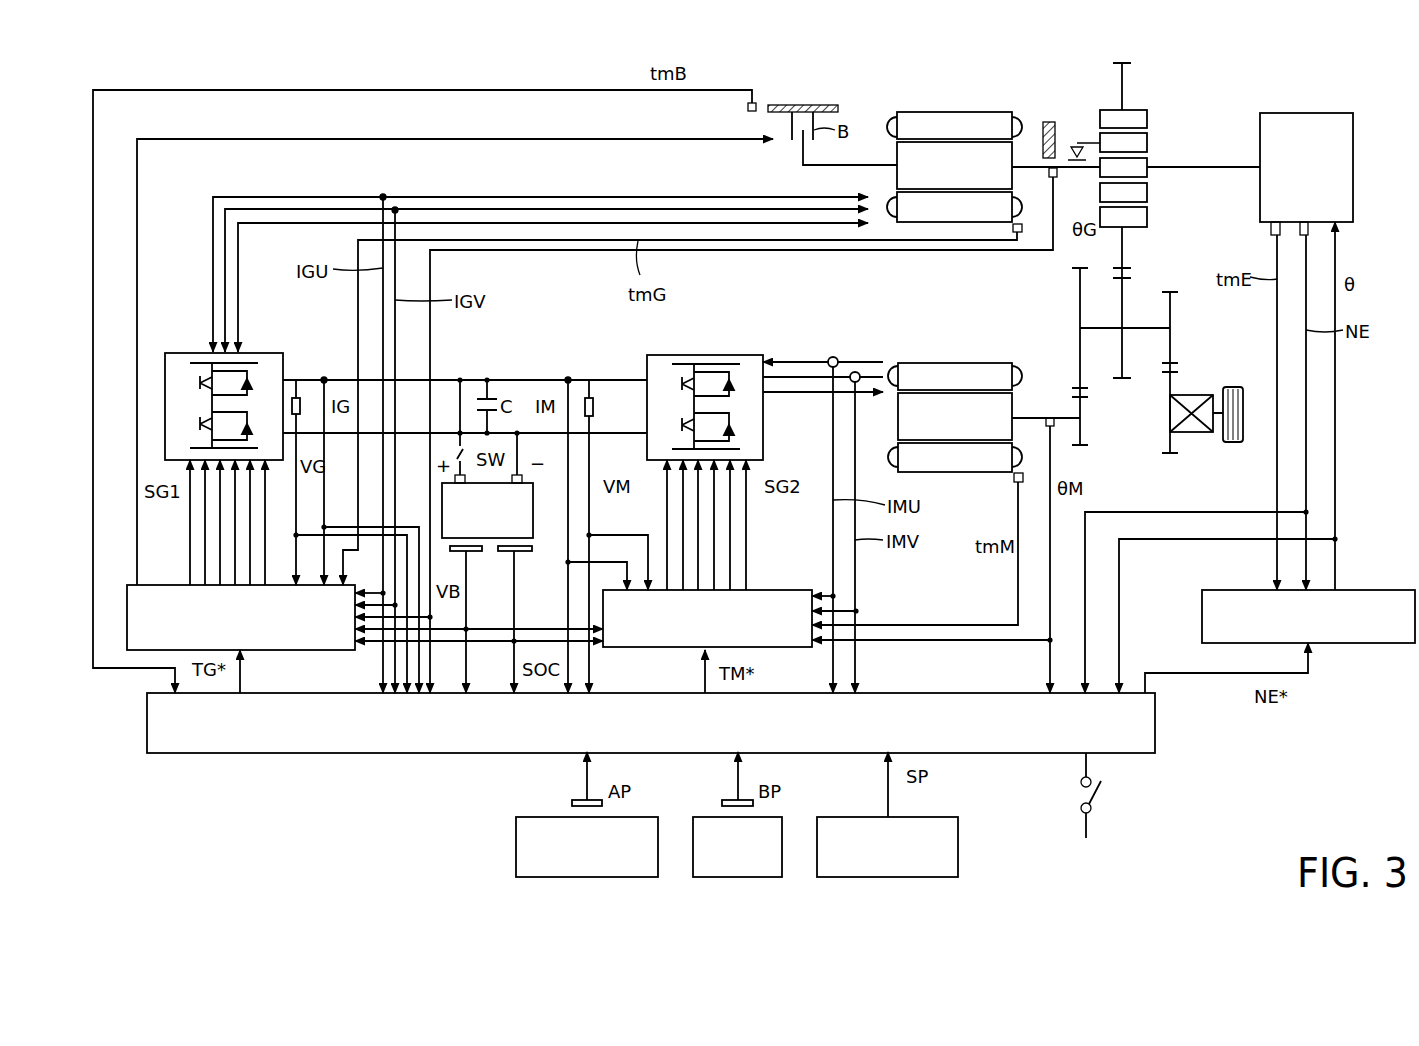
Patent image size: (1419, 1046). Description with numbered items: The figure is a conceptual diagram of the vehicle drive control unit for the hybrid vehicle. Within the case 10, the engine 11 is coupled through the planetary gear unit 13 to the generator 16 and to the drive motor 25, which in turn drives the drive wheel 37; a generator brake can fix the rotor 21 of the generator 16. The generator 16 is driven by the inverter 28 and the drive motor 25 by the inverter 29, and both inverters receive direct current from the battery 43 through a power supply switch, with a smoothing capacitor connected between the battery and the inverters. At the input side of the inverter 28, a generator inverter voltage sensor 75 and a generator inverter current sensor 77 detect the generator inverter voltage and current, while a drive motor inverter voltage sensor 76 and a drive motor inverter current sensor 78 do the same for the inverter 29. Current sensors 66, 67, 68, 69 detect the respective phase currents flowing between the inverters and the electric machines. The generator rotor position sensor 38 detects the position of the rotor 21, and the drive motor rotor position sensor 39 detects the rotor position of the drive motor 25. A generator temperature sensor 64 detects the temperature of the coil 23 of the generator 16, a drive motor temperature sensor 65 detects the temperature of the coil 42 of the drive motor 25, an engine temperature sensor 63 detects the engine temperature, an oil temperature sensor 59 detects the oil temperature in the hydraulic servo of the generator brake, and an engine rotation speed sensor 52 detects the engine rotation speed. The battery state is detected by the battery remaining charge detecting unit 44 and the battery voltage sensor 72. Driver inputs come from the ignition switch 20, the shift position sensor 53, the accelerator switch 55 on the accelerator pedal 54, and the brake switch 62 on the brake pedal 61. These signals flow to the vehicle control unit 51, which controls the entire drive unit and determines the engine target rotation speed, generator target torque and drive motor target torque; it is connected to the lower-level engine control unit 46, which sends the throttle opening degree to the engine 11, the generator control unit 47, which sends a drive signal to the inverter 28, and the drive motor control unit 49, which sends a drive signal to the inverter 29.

The case 10 is at (793, 100).
The engine 11 is at (1260, 188).
The planetary gear unit 13 is at (1148, 145).
The generator 16 is at (962, 128).
The ignition switch 20 is at (1100, 792).
The rotor 21 is at (980, 160).
The coil 23 is at (1010, 112).
The drive motor 25 is at (937, 360).
The inverter 28 is at (258, 353).
The inverter 29 is at (740, 355).
The drive wheel 37 is at (1232, 387).
The generator rotor position sensor 38 is at (1058, 177).
The drive motor rotor position sensor 39 is at (1050, 418).
The coil 42 is at (890, 360).
The battery 43 is at (533, 518).
The battery remaining charge detecting unit 44 is at (520, 552).
The engine control unit 46 is at (1388, 590).
The generator control unit 47 is at (172, 585).
The drive motor control unit 49 is at (790, 590).
The vehicle control unit 51 is at (1155, 730).
The engine rotation speed sensor 52 is at (1310, 233).
The shift position sensor 53 is at (958, 843).
The accelerator pedal 54 is at (516, 843).
The accelerator switch 55 is at (572, 802).
The oil temperature sensor 59 is at (748, 107).
The brake pedal 61 is at (775, 817).
The brake switch 62 is at (722, 802).
The engine temperature sensor 63 is at (1271, 229).
The generator temperature sensor 64 is at (1022, 233).
The drive motor temperature sensor 65 is at (1017, 482).
The current sensor 66 is at (383, 195).
The current sensor 67 is at (395, 208).
The current sensor 68 is at (833, 357).
The current sensor 69 is at (855, 372).
The battery voltage sensor 72 is at (475, 552).
The generator inverter voltage sensor 75 is at (296, 380).
The drive motor inverter voltage sensor 76 is at (589, 398).
The generator inverter current sensor 77 is at (324, 380).
The drive motor inverter current sensor 78 is at (568, 380).